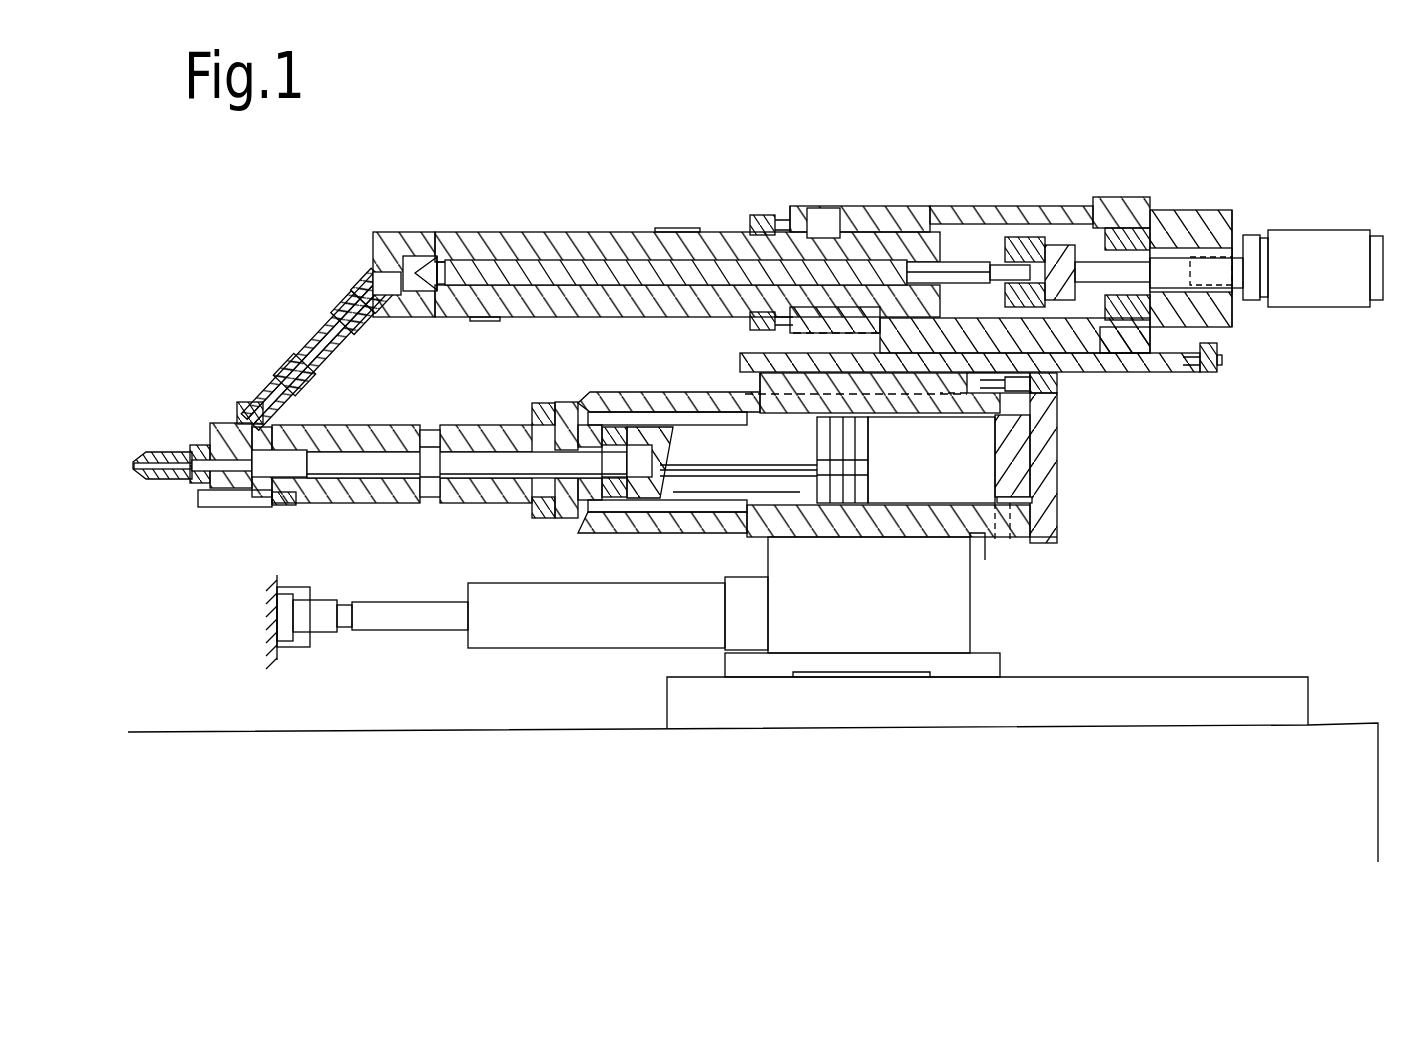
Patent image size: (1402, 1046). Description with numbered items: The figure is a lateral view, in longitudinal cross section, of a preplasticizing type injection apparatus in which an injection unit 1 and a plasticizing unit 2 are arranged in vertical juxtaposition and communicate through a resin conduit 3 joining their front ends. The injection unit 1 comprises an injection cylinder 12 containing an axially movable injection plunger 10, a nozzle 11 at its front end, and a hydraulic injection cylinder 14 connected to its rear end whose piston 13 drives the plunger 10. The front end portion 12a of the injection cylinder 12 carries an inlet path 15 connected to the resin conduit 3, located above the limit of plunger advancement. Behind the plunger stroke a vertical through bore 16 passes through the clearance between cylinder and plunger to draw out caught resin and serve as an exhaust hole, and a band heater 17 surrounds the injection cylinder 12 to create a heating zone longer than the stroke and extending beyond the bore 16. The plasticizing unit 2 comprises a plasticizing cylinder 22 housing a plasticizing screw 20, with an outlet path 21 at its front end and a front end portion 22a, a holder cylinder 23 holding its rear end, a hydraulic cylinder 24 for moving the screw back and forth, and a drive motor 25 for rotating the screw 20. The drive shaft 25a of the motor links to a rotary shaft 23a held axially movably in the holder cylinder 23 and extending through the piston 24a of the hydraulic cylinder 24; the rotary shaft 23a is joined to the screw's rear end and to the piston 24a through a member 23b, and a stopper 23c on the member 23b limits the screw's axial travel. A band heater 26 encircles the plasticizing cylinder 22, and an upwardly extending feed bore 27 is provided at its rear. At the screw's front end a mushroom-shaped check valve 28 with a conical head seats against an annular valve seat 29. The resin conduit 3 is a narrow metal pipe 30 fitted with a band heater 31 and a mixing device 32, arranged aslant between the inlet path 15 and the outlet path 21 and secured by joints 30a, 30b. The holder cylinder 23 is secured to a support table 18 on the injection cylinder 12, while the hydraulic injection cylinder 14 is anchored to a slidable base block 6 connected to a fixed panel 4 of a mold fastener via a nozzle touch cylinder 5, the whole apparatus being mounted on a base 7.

The injection unit 1 is at (260, 507).
The plasticizing unit 2 is at (722, 228).
The resin conduit 3 is at (328, 330).
The fixed panel 4 is at (277, 657).
The nozzle touch cylinder 5 is at (542, 635).
The slidable base block 6 is at (957, 578).
The base 7 is at (433, 748).
The injection plunger 10 is at (357, 463).
The nozzle 11 is at (163, 450).
The injection cylinder 12 is at (450, 425).
The front end portion of the injection cylinder 12a is at (227, 507).
The piston 13 is at (832, 485).
The hydraulic injection cylinder 14 is at (885, 520).
The inlet path 15 is at (230, 430).
The vertical through bore 16 is at (433, 503).
The band heater 17 is at (380, 417).
The support table 18 is at (745, 330).
The plasticizing screw 20 is at (560, 280).
The outlet path 21 is at (408, 233).
The plasticizing cylinder 22 is at (592, 233).
The cylinder head 22a is at (390, 232).
The holder cylinder 23 is at (975, 206).
The rotary shaft 23a is at (1093, 200).
The member 23b is at (1157, 363).
The stopper 23c is at (1112, 358).
The hydraulic cylinder 24 is at (1205, 210).
The piston 24a is at (1152, 200).
The drive motor 25 is at (1310, 243).
The drive shaft 25a is at (1255, 300).
The band heater 26 is at (695, 233).
The feed bore 27 is at (822, 212).
The check valve 28 is at (418, 233).
The annular valve seat 29 is at (460, 235).
The metal pipe 30 is at (340, 368).
The joint 30a is at (237, 407).
The joint 30b is at (372, 272).
The band heater 31 is at (287, 357).
The mixing device 32 is at (353, 290).